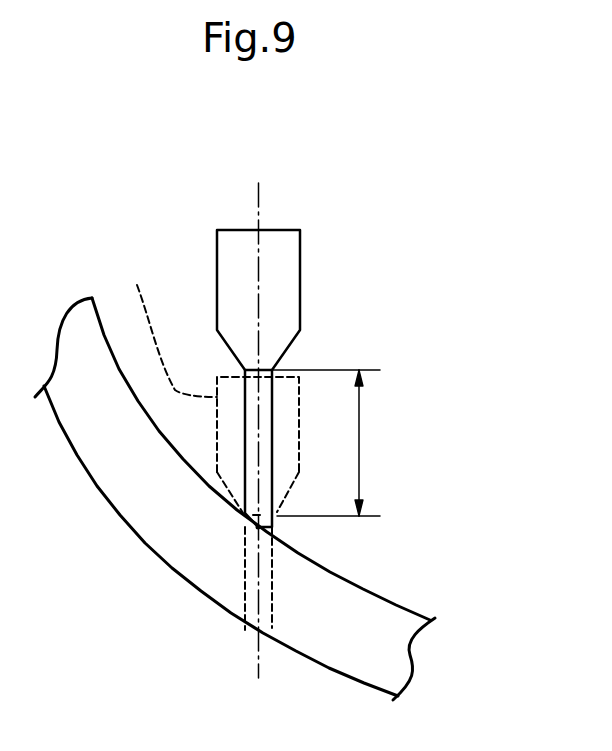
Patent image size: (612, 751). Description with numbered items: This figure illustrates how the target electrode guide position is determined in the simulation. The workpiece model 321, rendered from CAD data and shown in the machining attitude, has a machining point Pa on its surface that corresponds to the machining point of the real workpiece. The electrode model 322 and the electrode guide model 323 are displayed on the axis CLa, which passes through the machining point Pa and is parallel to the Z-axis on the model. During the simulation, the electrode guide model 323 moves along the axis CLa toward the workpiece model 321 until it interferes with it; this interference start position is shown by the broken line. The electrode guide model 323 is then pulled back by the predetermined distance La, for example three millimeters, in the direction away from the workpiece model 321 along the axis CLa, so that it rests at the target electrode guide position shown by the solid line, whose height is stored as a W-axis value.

The workpiece model 321 is at (367, 587).
The electrode model 322 is at (245, 442).
The electrode guide model 323 is at (217, 297).
The predetermined distance La is at (333, 443).
The axis CLa is at (261, 450).
The machining point Pa is at (258, 527).